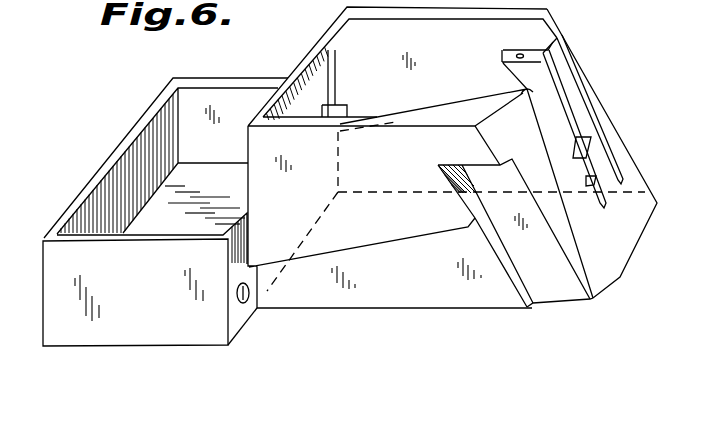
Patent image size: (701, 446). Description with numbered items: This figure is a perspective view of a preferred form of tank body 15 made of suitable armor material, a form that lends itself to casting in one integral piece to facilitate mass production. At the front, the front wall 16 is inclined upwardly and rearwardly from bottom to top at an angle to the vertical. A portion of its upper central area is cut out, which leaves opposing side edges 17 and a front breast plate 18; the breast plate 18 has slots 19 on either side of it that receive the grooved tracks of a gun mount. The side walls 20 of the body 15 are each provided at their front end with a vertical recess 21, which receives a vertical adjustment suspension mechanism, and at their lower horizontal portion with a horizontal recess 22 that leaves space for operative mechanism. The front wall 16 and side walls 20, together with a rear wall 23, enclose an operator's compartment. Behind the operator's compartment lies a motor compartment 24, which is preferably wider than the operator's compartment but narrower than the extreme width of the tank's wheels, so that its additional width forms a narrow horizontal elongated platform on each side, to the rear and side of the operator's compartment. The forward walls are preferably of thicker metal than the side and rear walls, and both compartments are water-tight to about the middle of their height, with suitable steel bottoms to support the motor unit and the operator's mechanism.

The tank body 15 is at (446, 230).
The front wall 16 is at (626, 227).
The side edges 17 is at (545, 108).
The front breast plate 18 is at (591, 150).
The slots 19 is at (588, 178).
The side walls 20 is at (456, 45).
The vertical recess 21 is at (508, 54).
The horizontal recess 22 is at (376, 291).
The rear wall 23 is at (326, 45).
The motor compartment 24 is at (160, 308).